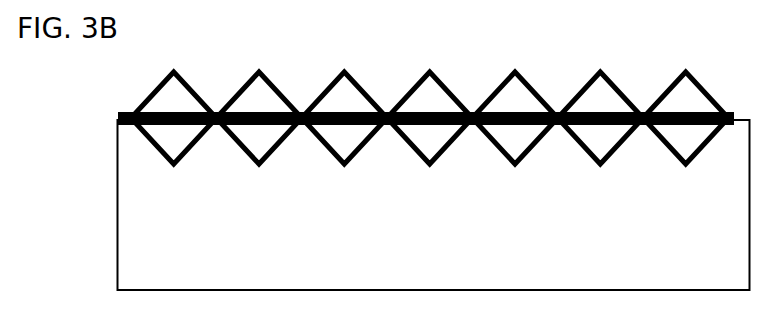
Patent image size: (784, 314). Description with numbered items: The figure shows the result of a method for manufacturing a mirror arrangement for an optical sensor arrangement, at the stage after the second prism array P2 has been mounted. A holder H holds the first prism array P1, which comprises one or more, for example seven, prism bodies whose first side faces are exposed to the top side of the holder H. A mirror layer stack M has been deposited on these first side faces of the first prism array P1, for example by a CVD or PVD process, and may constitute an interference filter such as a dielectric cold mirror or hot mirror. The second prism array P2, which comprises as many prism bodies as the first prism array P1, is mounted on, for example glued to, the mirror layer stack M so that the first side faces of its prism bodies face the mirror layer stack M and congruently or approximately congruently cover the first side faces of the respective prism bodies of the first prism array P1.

The holder H is at (434, 205).
The mirror layer stack M is at (130, 114).
The first prism array P1 is at (273, 166).
The second prism array P2 is at (238, 78).